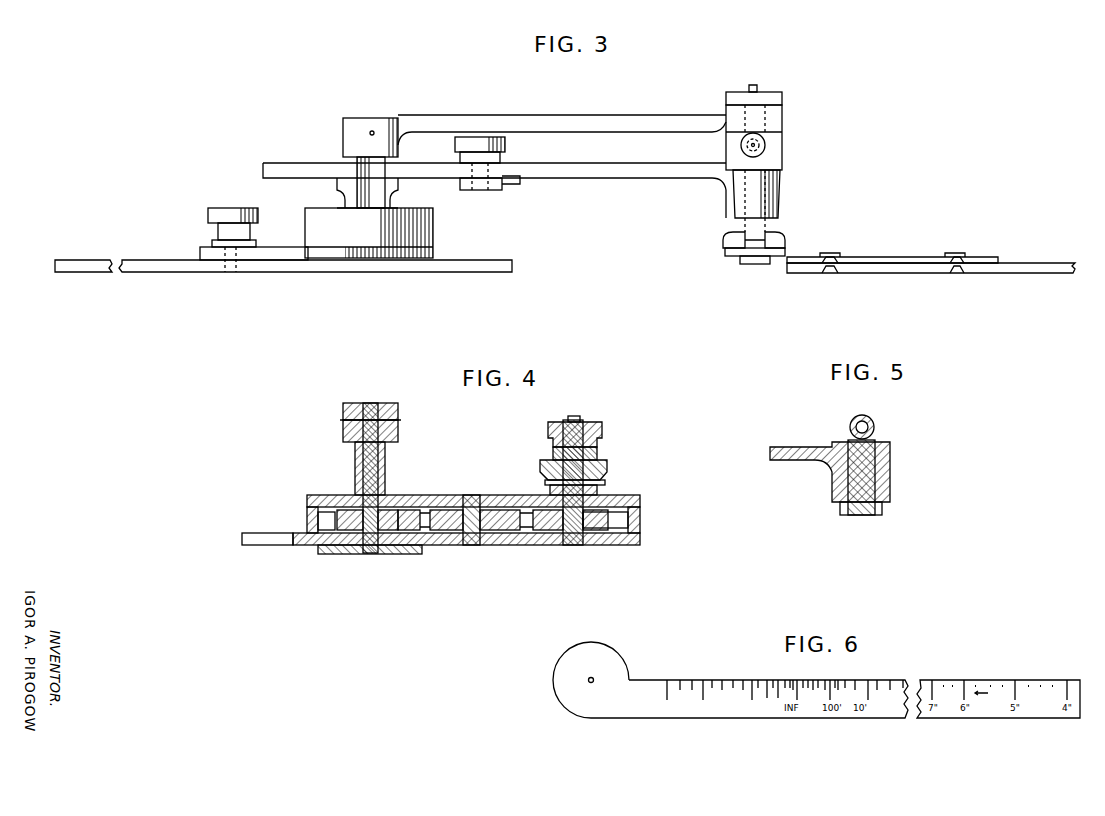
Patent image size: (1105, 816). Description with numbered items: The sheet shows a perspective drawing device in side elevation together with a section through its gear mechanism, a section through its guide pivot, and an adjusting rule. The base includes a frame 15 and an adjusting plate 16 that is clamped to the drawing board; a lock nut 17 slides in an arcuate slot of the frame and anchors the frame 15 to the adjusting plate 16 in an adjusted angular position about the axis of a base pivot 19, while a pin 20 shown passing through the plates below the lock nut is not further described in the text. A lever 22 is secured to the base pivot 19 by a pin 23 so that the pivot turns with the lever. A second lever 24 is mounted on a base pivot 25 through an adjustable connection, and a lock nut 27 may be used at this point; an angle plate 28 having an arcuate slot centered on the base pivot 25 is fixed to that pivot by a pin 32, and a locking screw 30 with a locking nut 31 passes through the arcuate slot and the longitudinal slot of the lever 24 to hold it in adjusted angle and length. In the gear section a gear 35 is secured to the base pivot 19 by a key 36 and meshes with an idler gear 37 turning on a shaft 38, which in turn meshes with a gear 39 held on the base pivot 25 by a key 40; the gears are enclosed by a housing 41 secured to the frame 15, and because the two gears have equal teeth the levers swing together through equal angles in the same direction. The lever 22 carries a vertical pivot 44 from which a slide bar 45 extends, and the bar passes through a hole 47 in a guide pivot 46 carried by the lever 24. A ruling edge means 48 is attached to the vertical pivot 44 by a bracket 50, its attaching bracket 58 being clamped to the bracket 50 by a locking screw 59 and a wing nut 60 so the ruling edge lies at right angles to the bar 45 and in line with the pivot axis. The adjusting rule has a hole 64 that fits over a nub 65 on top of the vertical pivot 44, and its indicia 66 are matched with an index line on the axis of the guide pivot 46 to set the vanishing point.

In FIG. 3, the frame 15 is at (290, 250).
In FIG. 4, the frame 15 is at (626, 545).
In FIG. 3, the adjusting plate 16 is at (163, 272).
In FIG. 4, the adjusting plate 16 is at (326, 555).
In FIG. 3, the lock nut 17 is at (210, 216).
In FIG. 4, the base pivot 19 is at (370, 553).
In FIG. 3, the pin 20 is at (236, 272).
In FIG. 3, the lever 22 is at (603, 117).
In FIG. 4, the lever 22 is at (383, 405).
In FIG. 3, the pin 23 is at (370, 133).
In FIG. 4, the pin 23 is at (343, 420).
In FIG. 3, the lever 24 is at (641, 178).
In FIG. 4, the lever 24 is at (553, 452).
In FIG. 4, the base pivot 25 is at (575, 420).
In FIG. 4, the lock nut 27 is at (602, 430).
In FIG. 3, the angle plate 28 is at (520, 180).
In FIG. 4, the angle plate 28 is at (548, 468).
In FIG. 3, the locking screw 30 is at (470, 190).
In FIG. 3, the locking nut 31 is at (505, 145).
In FIG. 4, the pin 32 is at (605, 482).
In FIG. 4, the gear 35 is at (318, 514).
In FIG. 4, the key 36 is at (346, 510).
In FIG. 4, the idler gear 37 is at (470, 497).
In FIG. 4, the shaft 38 is at (470, 543).
In FIG. 4, the gear 39 is at (548, 530).
In FIG. 4, the key 40 is at (572, 545).
In FIG. 3, the housing 41 is at (433, 236).
In FIG. 4, the housing 41 is at (640, 512).
In FIG. 3, the vertical pivot 44 is at (778, 151).
In FIG. 3, the bar 45 is at (765, 138).
In FIG. 5, the bar 45 is at (874, 427).
In FIG. 5, the guide pivot 46 is at (845, 447).
In FIG. 5, the hole 47 is at (858, 418).
In FIG. 3, the ruling edge means 48 is at (1052, 273).
In FIG. 3, the bracket 50 is at (725, 252).
In FIG. 3, the attaching bracket 58 is at (918, 257).
In FIG. 3, the locking screw 59 is at (752, 264).
In FIG. 3, the wing nut 60 is at (725, 240).
In FIG. 6, the hole 64 is at (593, 678).
In FIG. 3, the nub 65 is at (754, 85).
In FIG. 6, the indicia 66 is at (988, 693).